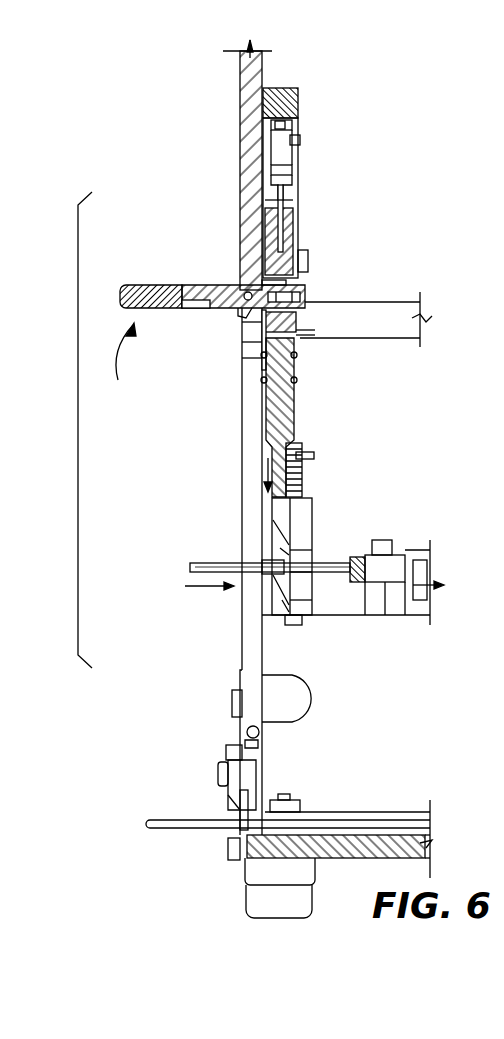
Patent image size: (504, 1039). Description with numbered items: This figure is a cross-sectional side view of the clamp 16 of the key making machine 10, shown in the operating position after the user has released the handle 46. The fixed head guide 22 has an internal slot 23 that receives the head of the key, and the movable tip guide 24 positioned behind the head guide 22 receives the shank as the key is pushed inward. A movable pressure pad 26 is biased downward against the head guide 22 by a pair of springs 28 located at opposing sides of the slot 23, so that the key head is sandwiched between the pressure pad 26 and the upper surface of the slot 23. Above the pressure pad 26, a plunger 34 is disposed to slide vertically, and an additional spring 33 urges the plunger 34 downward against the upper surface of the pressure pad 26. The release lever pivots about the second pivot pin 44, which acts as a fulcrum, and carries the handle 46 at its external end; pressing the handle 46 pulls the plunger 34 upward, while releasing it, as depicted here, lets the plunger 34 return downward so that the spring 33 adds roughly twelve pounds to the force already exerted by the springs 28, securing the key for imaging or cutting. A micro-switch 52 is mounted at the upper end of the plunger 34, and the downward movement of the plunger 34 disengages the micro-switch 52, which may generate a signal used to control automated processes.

The key making machine 10 is at (100, 850).
The clamp 16 is at (78, 434).
The head guide 22 is at (292, 622).
The slot 23 is at (280, 570).
The tip guide 24 is at (384, 545).
The pressure pad 26 is at (305, 528).
The springs 28 is at (300, 472).
The spring 33 is at (296, 364).
The plunger 34 is at (290, 405).
The second pivot pin 44 is at (220, 310).
The handle 46 is at (160, 309).
The micro-switch 52 is at (285, 158).